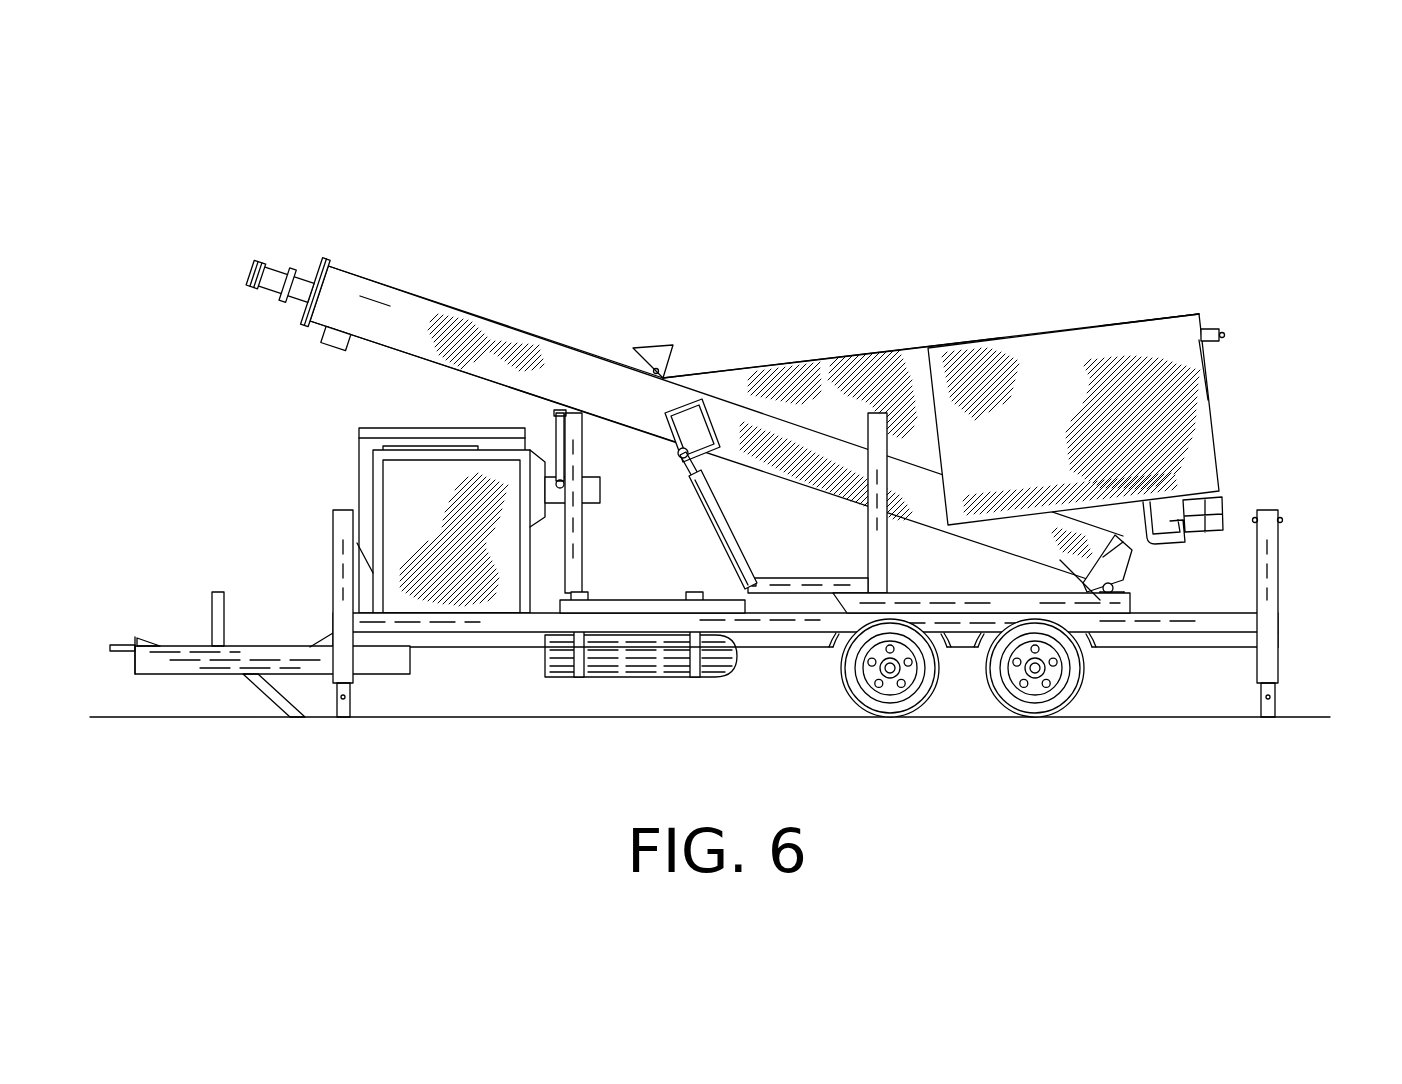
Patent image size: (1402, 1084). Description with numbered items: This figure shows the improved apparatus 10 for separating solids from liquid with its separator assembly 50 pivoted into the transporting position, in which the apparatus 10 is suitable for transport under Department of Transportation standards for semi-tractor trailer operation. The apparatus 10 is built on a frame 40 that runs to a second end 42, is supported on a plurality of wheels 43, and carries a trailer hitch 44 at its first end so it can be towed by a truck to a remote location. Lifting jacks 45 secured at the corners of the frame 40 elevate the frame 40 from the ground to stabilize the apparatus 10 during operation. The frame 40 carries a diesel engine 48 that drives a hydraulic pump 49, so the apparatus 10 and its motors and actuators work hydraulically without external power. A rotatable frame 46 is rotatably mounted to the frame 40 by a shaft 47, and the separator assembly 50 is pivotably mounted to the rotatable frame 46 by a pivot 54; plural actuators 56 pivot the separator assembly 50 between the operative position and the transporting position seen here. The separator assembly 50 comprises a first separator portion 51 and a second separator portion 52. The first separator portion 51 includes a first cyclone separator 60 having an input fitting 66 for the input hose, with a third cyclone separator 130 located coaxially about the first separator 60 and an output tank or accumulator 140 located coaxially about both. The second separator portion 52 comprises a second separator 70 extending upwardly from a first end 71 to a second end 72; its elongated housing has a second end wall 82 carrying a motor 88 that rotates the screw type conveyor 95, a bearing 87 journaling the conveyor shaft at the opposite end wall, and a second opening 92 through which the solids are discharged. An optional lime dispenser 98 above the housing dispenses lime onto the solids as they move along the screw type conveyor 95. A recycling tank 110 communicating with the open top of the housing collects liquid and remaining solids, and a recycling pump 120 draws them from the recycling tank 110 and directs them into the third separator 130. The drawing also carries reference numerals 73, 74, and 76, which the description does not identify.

The improved apparatus 10 is at (1060, 183).
The frame 40 is at (859, 685).
The second end 42 is at (1230, 625).
The wheels 43 is at (965, 695).
The trailer hitch 44 is at (121, 647).
The lifting jacks 45 is at (350, 683).
The rotatable frame 46 is at (933, 600).
The shaft 47 is at (962, 600).
The diesel engine 48 is at (391, 481).
The hydraulic pump 49 is at (418, 503).
The separator assembly 50 is at (1139, 367).
The first separator portion 51 is at (1172, 447).
The second separator portion 52 is at (547, 340).
The pivot 54 is at (1090, 543).
The actuators 56 is at (727, 513).
The first separator 60 is at (1153, 336).
The input fitting 66 is at (1220, 332).
The second separator 70 is at (505, 295).
The first end 71 is at (1225, 648).
The second end 72 is at (505, 295).
The hydraulic cylinder 73 is at (668, 424).
The conveyor trough 74 is at (793, 440).
The trough discharge end 76 is at (1118, 558).
The second end wall 82 is at (302, 271).
The bearing 87 is at (1118, 558).
The motor 88 is at (262, 262).
The second opening 92 is at (323, 329).
The screw type conveyor 95 is at (373, 307).
The dispenser 98 is at (660, 347).
The recycling tank 110 is at (795, 405).
The recycling pump 120 is at (893, 360).
The third separator 130 is at (980, 400).
The accumulator 140 is at (1206, 363).